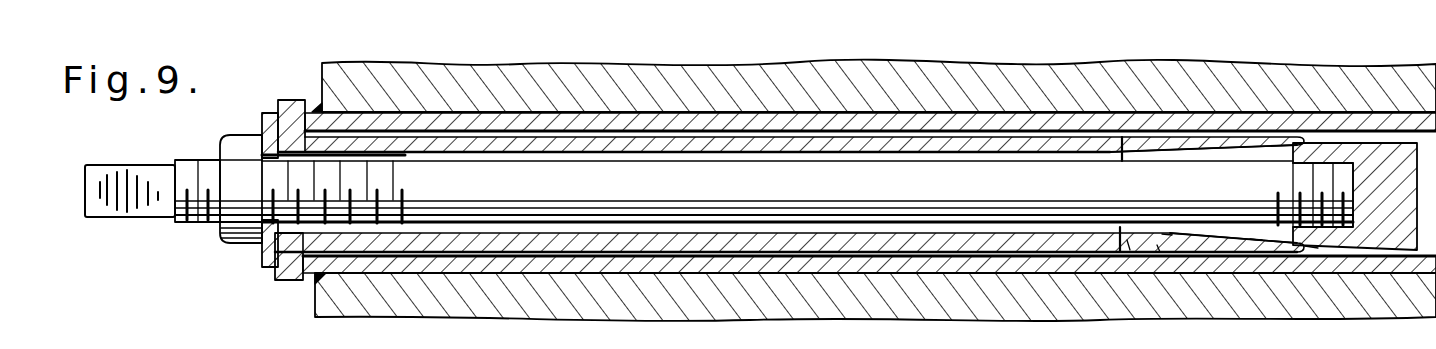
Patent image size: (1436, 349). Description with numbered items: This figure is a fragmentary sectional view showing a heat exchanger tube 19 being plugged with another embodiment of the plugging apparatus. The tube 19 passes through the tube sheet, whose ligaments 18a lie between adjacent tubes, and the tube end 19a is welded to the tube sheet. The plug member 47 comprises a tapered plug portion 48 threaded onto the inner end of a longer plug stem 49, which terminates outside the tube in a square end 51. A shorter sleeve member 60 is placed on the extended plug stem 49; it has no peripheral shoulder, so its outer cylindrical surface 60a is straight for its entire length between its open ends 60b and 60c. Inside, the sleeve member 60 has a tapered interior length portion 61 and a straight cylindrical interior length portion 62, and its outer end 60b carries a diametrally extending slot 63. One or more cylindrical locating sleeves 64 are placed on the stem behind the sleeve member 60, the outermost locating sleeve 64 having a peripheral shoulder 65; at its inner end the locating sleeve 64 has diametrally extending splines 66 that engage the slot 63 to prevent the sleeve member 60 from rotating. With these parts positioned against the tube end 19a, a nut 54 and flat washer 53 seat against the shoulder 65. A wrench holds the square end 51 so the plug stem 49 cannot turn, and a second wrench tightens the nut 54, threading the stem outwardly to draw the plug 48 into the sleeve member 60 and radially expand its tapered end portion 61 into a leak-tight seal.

The tube sheet ligaments 18a is at (420, 78).
The heat exchanger tubes 19 is at (518, 115).
The tube ends 19a is at (305, 345).
The plug member 47 is at (905, 203).
The tapered plug portion 48 is at (1397, 240).
The plug stem 49 is at (781, 195).
The square end 51 is at (105, 212).
The flat washer 53 is at (280, 268).
The nut 54 is at (235, 202).
The sleeve member 60 is at (1189, 243).
The outer cylindrical surface 60a is at (1157, 250).
The outer end 60b is at (1127, 243).
The open end 60c is at (1312, 249).
The tapered interior length portion 61 is at (1257, 240).
The straight cylindrical interior length portion 62 is at (1167, 236).
The slot 63 is at (1130, 150).
The locating sleeve 64 is at (863, 145).
The peripheral shoulder 65 is at (292, 100).
The splines 66 is at (1118, 237).